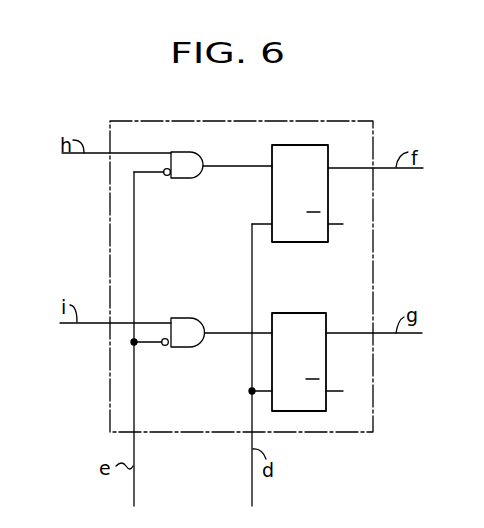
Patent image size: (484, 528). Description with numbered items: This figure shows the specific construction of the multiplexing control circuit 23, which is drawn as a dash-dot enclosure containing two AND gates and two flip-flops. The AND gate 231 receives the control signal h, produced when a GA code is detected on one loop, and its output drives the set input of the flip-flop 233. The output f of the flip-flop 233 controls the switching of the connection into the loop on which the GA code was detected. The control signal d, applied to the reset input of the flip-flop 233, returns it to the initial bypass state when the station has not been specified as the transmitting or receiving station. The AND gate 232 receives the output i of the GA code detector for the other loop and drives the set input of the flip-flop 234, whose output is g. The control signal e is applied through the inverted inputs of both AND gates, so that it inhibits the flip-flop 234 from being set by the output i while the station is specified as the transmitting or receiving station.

The multiplexing control circuit 23 is at (293, 122).
The AND gate 231 is at (192, 180).
The AND gate 232 is at (200, 318).
The flip-flop 233 is at (272, 199).
The flip-flop 234 is at (302, 313).